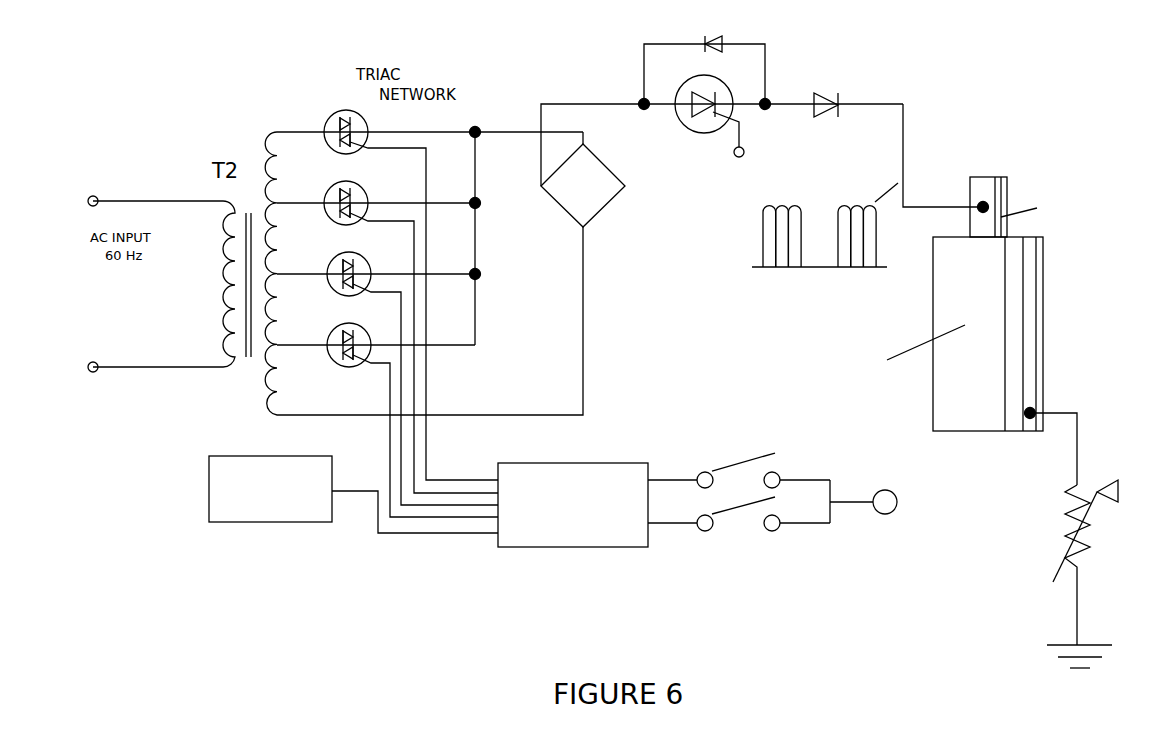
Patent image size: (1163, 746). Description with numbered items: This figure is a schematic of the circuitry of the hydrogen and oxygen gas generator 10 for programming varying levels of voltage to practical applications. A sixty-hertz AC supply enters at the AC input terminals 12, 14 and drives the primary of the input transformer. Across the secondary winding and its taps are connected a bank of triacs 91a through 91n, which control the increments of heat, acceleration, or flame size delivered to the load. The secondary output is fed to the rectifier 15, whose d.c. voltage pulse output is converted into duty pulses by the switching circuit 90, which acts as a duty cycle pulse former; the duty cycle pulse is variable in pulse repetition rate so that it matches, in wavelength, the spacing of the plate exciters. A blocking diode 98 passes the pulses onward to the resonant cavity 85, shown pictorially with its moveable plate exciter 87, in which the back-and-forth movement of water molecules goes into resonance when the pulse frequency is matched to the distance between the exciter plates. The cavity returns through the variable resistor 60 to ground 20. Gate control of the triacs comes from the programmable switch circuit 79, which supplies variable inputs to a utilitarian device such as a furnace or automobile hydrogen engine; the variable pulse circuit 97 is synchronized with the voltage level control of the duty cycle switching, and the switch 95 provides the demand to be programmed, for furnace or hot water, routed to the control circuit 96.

The hydrogen and oxygen gas generator 10 is at (195, 307).
The AC input terminal 12 is at (97, 197).
The AC input terminal 14 is at (97, 363).
The rectifier 15 is at (572, 200).
The ground 20 is at (1062, 659).
The variable resistor 60 is at (1096, 562).
The programmable switch circuit 79 is at (522, 527).
The resonant cavity 85 is at (1025, 337).
The plate exciter 87 is at (995, 190).
The SCR switching circuit 90 is at (698, 118).
The triac 91a is at (332, 105).
The triac 91n is at (337, 348).
The switch 95 is at (818, 477).
The control circuit 96 is at (888, 500).
The variable pulse circuit 97 is at (215, 485).
The blocking diode 98 is at (823, 115).